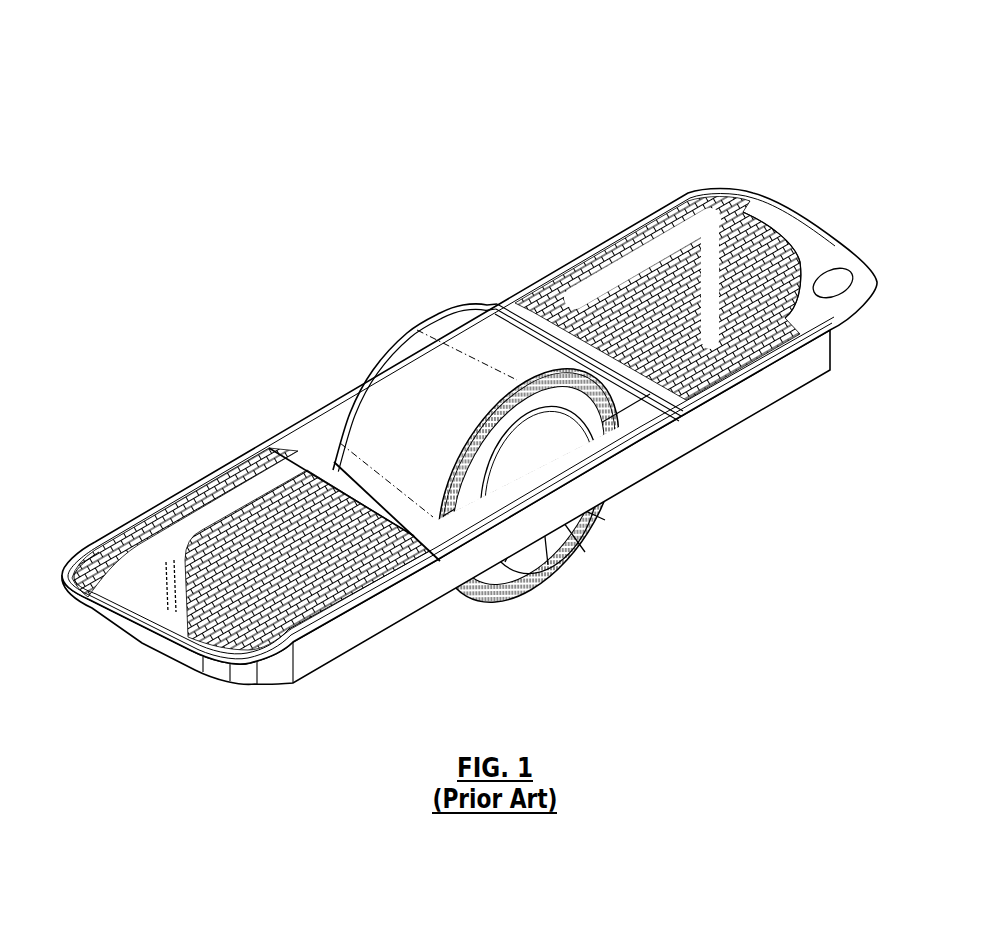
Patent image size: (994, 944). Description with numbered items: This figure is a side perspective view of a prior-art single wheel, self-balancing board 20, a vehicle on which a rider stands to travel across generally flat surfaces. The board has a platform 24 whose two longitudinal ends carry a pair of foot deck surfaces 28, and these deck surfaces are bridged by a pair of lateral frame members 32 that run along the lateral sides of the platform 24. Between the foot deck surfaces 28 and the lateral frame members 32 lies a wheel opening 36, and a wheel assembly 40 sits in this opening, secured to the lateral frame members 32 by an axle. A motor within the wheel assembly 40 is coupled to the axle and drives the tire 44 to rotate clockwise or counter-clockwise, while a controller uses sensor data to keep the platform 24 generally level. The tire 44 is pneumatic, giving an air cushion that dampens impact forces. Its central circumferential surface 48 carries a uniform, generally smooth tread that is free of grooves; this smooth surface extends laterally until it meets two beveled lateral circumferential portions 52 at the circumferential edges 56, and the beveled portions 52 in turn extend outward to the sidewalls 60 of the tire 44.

The single wheel, self-balancing board 20 is at (297, 116).
The platform 24 is at (758, 420).
The foot deck surfaces 28 is at (678, 280).
The lateral frame members 32 is at (328, 410).
The wheel opening 36 is at (298, 450).
The wheel assembly 40 is at (422, 291).
The tire 44 is at (378, 357).
The central circumferential surface 48 is at (467, 336).
The beveled lateral circumferential portions 52 is at (458, 495).
The circumferential edges 56 is at (448, 505).
The sidewalls 60 is at (604, 414).